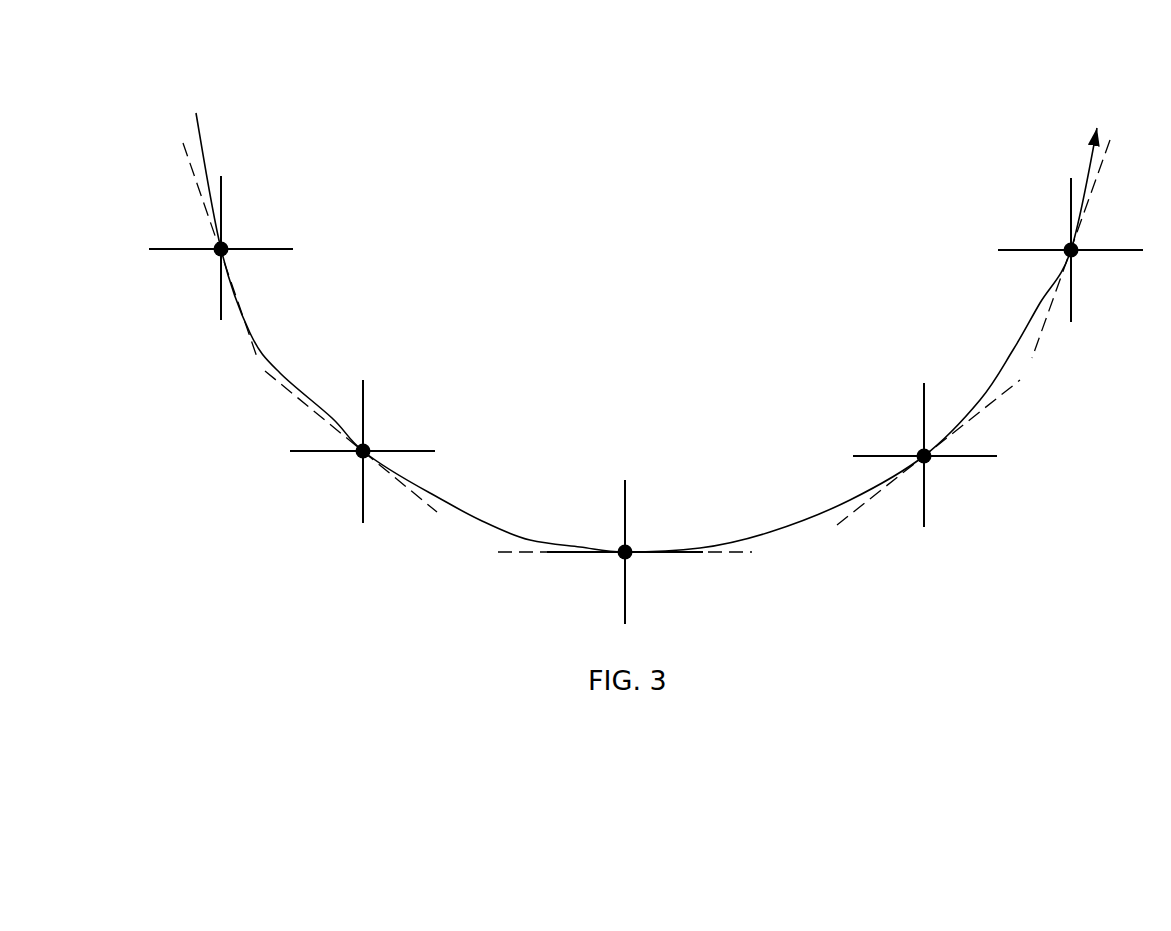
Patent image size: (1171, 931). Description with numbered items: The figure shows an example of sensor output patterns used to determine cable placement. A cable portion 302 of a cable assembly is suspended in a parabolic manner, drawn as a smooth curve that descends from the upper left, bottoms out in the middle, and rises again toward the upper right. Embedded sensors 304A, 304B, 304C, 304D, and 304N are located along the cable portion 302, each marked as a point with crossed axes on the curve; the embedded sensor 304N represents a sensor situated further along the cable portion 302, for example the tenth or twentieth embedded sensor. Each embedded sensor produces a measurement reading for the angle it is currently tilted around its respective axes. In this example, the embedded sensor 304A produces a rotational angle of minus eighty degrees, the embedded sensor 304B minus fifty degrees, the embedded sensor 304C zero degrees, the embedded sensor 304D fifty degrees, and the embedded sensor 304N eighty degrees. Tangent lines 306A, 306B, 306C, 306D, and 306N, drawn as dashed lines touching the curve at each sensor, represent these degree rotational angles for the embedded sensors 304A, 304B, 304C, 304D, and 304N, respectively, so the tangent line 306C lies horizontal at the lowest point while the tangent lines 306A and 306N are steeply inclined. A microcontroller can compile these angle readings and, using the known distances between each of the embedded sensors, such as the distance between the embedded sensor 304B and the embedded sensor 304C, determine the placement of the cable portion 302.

The cable portion 302 is at (385, 60).
The embedded sensor 304A is at (226, 245).
The embedded sensor 304B is at (368, 446).
The embedded sensor 304C is at (632, 546).
The embedded sensor 304D is at (918, 450).
The embedded sensor 304N is at (1065, 245).
The tangent line 306A is at (241, 336).
The tangent line 306B is at (427, 509).
The tangent line 306C is at (727, 556).
The tangent line 306D is at (858, 514).
The tangent line 306N is at (1048, 338).